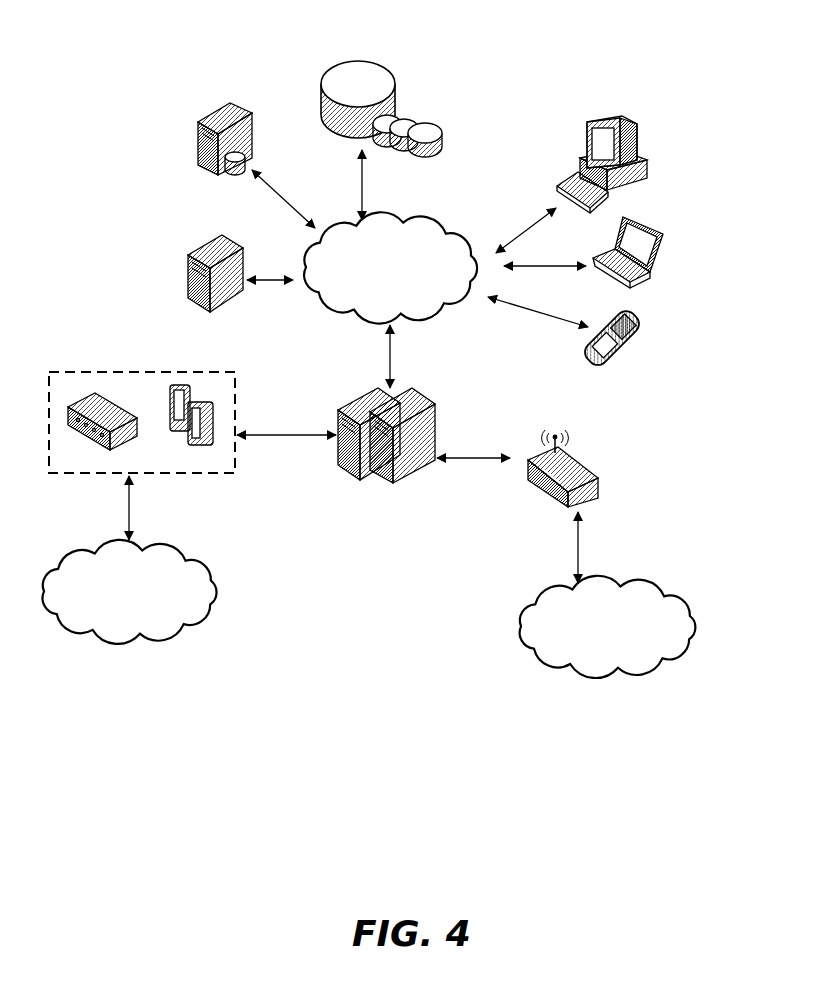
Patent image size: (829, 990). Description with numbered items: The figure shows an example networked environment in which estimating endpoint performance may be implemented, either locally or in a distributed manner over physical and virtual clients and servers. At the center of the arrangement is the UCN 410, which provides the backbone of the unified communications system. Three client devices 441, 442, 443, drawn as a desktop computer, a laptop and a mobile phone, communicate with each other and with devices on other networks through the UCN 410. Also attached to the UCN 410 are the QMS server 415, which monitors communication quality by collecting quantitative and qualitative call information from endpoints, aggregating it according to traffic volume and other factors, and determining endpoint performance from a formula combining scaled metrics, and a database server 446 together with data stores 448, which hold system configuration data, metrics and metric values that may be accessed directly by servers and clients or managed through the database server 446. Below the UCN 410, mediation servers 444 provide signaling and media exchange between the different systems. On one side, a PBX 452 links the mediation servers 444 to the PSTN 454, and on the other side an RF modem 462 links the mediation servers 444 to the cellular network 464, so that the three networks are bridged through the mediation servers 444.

The UCN 410 is at (395, 208).
The QMS server 415 is at (188, 262).
The client device 441 is at (635, 108).
The client device 442 is at (663, 214).
The client device 443 is at (638, 312).
The mediation server 444 is at (372, 388).
The database server 446 is at (231, 182).
The data store 448 is at (372, 46).
The PBX 452 is at (95, 372).
The PSTN 454 is at (96, 646).
The RF modem 462 is at (563, 430).
The cellular network 464 is at (570, 681).